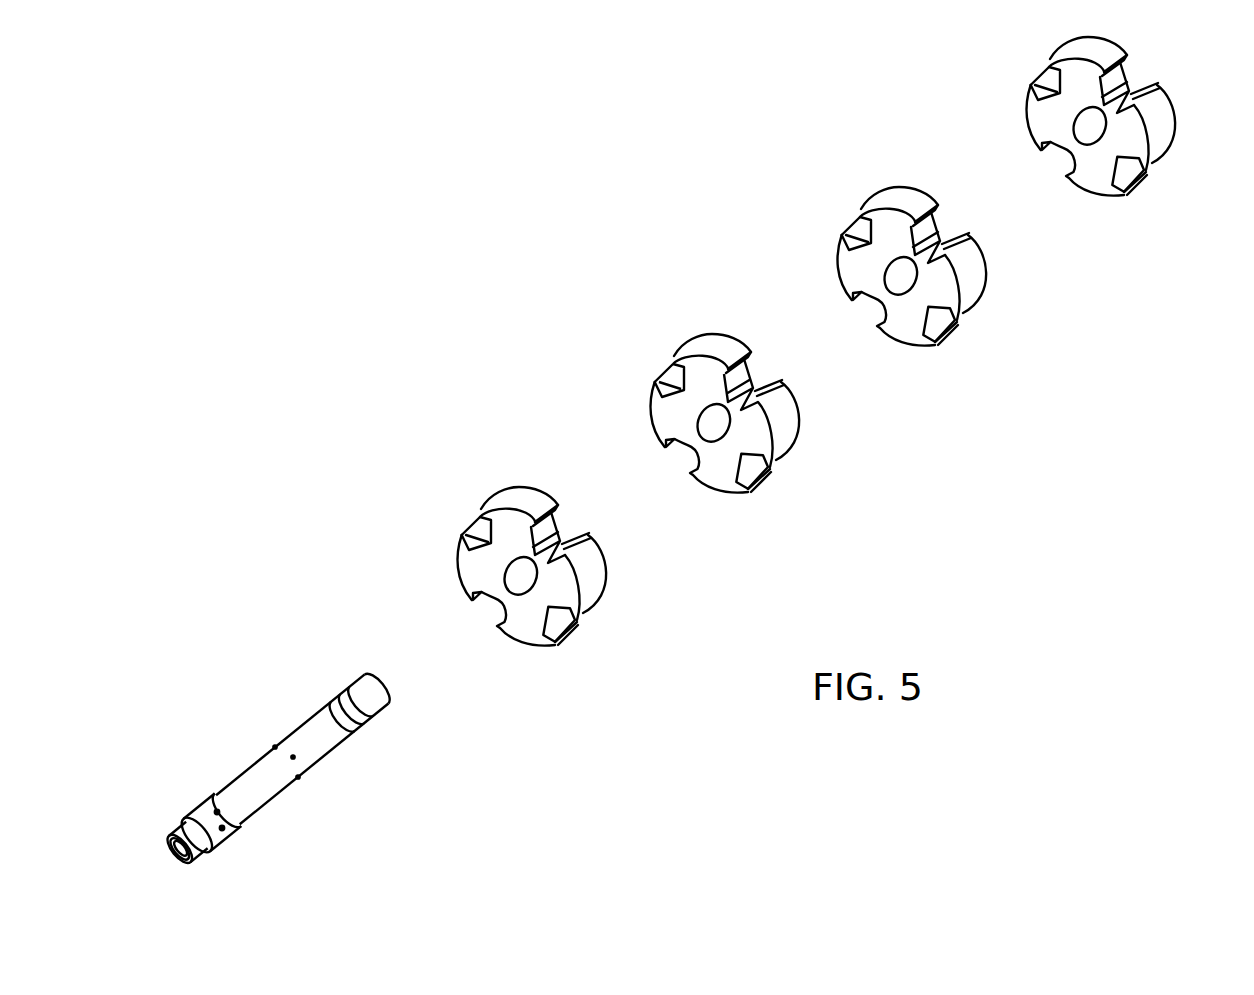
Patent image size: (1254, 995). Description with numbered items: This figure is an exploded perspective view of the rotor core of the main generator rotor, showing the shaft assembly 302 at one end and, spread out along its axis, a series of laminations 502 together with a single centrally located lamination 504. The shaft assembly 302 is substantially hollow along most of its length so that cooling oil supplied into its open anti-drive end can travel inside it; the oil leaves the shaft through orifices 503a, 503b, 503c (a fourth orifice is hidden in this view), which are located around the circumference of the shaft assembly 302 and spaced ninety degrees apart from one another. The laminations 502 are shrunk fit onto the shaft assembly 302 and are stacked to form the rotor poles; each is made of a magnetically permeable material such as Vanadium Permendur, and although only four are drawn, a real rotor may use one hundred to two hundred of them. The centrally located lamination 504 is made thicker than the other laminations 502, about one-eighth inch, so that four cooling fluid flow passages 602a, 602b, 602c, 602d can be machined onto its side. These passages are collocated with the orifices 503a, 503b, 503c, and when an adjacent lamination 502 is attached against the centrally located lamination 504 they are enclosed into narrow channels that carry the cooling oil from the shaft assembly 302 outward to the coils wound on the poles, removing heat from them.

The shaft assembly 302 is at (280, 783).
The laminations 502 is at (590, 603).
The orifice 503a is at (275, 747).
The orifice 503b is at (293, 757).
The orifice 503c is at (298, 777).
The centrally located lamination 504 is at (797, 437).
The cooling fluid flow passage 602a is at (718, 405).
The cooling fluid flow passage 602b is at (728, 452).
The cooling fluid flow passage 602c is at (690, 444).
The cooling fluid flow passage 602d is at (672, 389).